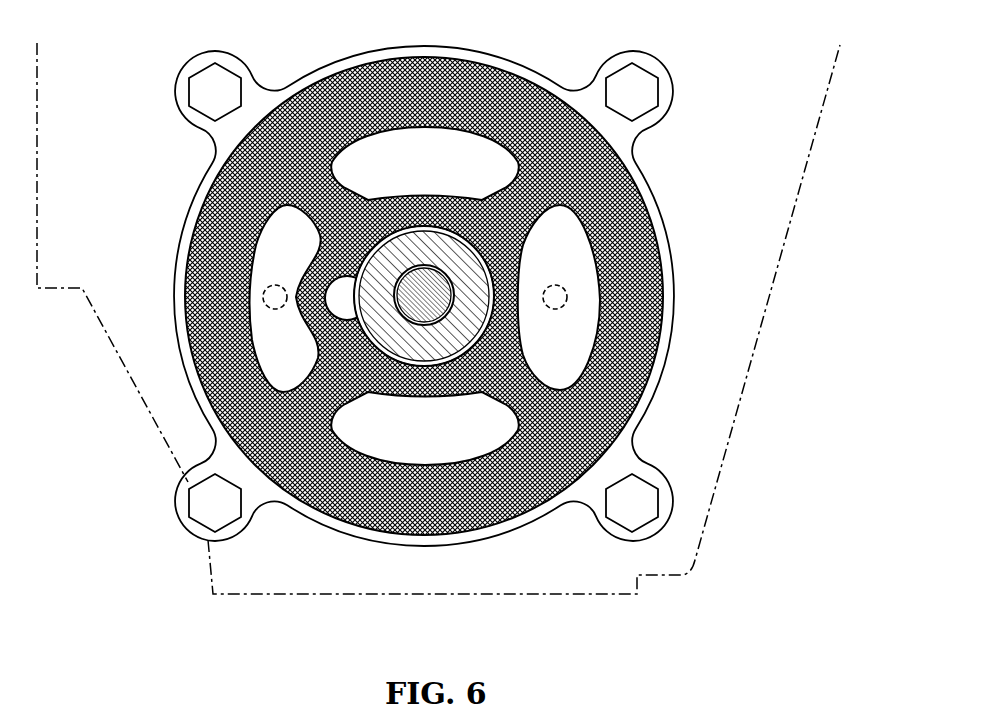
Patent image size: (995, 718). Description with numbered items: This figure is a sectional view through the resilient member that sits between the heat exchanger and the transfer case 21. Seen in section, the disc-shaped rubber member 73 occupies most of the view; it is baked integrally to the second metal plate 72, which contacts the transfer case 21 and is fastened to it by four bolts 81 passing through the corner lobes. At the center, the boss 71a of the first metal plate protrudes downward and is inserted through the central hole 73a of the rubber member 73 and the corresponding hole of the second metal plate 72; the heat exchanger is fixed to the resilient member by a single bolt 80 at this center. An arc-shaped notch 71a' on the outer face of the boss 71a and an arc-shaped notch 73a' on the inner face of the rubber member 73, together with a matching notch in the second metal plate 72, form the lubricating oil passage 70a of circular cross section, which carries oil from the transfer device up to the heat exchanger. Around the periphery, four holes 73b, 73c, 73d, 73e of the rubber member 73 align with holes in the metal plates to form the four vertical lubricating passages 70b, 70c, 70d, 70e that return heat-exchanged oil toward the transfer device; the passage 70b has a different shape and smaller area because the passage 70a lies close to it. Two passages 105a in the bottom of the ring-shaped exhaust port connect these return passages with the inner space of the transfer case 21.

The transfer case 21 is at (721, 497).
The second metal plate 72 is at (676, 226).
The rubber member 73 is at (668, 350).
The bolts 81 is at (213, 75).
The lubricating oil passage 70a is at (347, 283).
The lubricating passage 70b is at (284, 298).
The lubricating passage 70c is at (425, 163).
The lubricating passage 70d is at (559, 297).
The lubricating passage 70e is at (425, 428).
The boss 71a is at (439, 307).
The notch 71a' is at (424, 284).
The bolt 80 is at (438, 287).
The passages 105a is at (275, 297).
The notch 73a' is at (306, 222).
The hole 73a is at (294, 378).
The hole 73b is at (250, 298).
The hole 73c is at (420, 125).
The hole 73d is at (598, 297).
The hole 73e is at (423, 468).